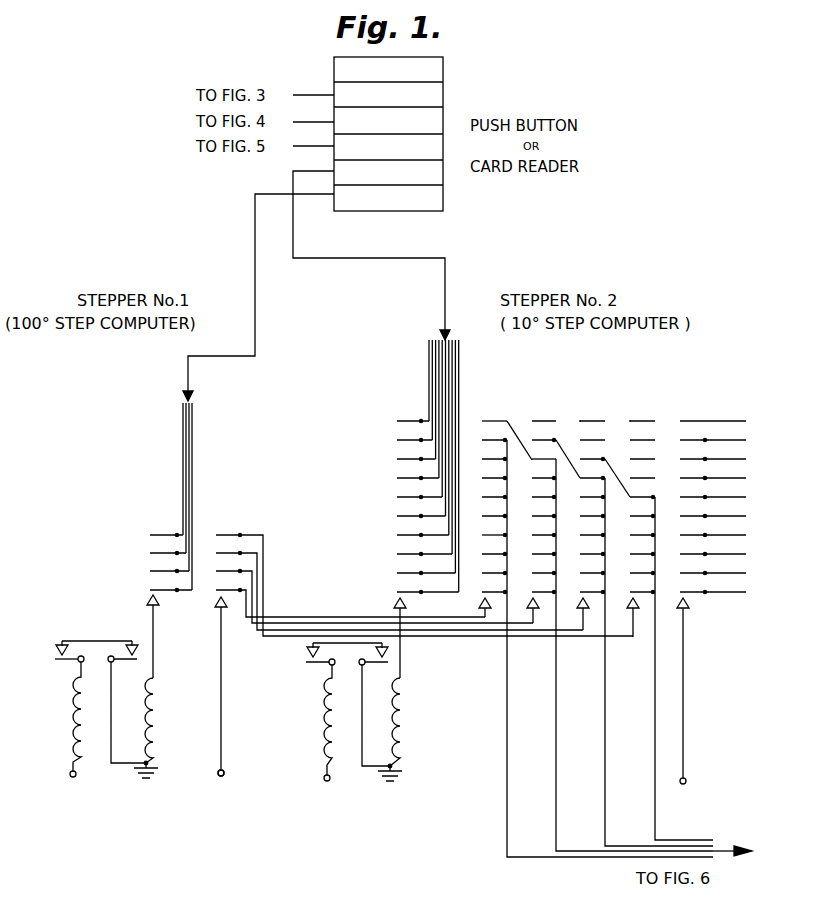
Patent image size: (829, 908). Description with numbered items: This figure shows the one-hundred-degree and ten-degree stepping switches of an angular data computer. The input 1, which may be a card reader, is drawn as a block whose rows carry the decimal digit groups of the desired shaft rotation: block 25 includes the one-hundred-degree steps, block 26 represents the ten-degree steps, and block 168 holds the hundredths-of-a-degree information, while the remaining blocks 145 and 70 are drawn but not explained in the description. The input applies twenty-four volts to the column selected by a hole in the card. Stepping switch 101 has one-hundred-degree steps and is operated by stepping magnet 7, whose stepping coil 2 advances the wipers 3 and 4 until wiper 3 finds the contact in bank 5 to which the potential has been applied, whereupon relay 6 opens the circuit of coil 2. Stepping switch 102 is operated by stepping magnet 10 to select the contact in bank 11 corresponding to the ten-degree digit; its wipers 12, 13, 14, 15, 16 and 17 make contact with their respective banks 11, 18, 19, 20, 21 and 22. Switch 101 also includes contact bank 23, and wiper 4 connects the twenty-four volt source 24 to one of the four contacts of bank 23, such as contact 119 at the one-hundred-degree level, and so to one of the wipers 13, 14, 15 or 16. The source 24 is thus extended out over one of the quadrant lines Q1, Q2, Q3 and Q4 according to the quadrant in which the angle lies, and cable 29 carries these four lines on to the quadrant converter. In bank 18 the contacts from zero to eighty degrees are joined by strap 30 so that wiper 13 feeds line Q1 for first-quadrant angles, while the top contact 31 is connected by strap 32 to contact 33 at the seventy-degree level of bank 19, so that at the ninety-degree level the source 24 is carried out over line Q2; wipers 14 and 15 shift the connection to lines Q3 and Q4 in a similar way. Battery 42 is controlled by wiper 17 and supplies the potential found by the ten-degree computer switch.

The input 1 is at (443, 57).
The block 168 is at (443, 98).
The 0.1 degree input line to FIG. 4 145 is at (443, 118).
The 1 degree input line to FIG. 5 70 is at (443, 146).
The block 26 is at (443, 185).
The block 25 is at (443, 211).
The stepping switch 101 is at (132, 478).
The bank 5 is at (167, 524).
The wiper 3 is at (147, 603).
The contact bank 23 is at (232, 533).
The contact 119 is at (224, 578).
The wiper 4 is at (215, 605).
The 24 volt source 24 is at (224, 771).
The stepping magnet 7 is at (60, 672).
The stepping coil 2 is at (66, 722).
The relay 6 is at (152, 716).
The stepping magnet 10 is at (350, 768).
The bank 11 is at (405, 419).
The stepping switch 102 is at (622, 381).
The bank 18 is at (483, 421).
The strap 30 is at (483, 537).
The top contact 31 is at (497, 420).
The strap 32 is at (512, 421).
The contact 33 is at (533, 462).
The bank 19 is at (544, 421).
The bank 20 is at (593, 421).
The bank 21 is at (643, 421).
The bank 22 is at (700, 421).
The wiper 12 is at (406, 606).
The wiper 13 is at (480, 606).
The wiper 14 is at (529, 604).
The wiper 15 is at (579, 601).
The wiper 16 is at (629, 602).
The wiper 17 is at (680, 602).
The battery 42 is at (695, 773).
The cable 29 is at (722, 849).
The quadrant line Q1 is at (505, 720).
The quadrant line Q2 is at (553, 720).
The quadrant line Q3 is at (603, 720).
The quadrant line Q4 is at (653, 720).